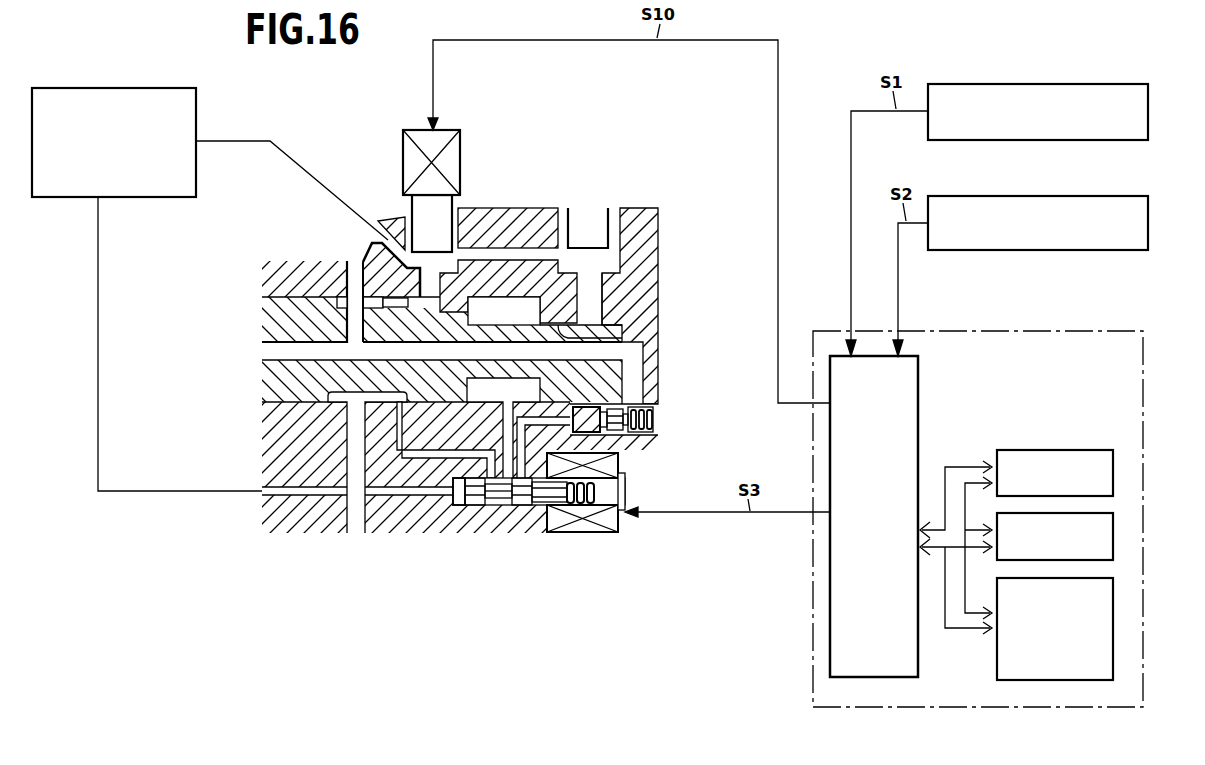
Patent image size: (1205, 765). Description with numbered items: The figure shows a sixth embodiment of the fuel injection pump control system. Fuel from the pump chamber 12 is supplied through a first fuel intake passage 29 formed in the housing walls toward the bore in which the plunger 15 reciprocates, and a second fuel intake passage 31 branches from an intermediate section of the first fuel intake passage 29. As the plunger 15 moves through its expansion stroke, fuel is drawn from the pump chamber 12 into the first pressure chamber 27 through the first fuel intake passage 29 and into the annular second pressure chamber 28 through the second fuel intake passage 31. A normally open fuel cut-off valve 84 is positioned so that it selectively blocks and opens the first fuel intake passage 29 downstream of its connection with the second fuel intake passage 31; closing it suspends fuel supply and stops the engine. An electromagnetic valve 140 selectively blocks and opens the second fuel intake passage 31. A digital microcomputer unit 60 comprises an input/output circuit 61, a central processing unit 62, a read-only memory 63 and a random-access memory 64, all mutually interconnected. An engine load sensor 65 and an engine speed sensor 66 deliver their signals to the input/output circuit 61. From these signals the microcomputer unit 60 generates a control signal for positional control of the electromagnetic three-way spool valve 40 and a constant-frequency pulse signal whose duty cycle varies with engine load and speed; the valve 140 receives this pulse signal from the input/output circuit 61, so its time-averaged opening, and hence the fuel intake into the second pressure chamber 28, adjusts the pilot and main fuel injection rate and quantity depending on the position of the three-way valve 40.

The pump chamber 12 is at (190, 103).
The plunger 15 is at (238, 320).
The first pressure chamber 27 is at (637, 342).
The second pressure chamber 28 is at (508, 303).
The first fuel intake passage 29 is at (596, 298).
The second fuel intake passage 31 is at (427, 278).
The electromagnetic three-way spool valve 40 is at (636, 472).
The digital microcomputer unit 60 is at (800, 595).
The input/output circuit 61 is at (920, 418).
The central processing unit 62 is at (1115, 618).
The read-only memory 63 is at (1115, 540).
The random-access memory 64 is at (1115, 476).
The engine load sensor 65 is at (1150, 116).
The engine speed sensor 66 is at (1150, 226).
The fuel cut-off valve 84 is at (602, 218).
The electromagnetic valve 140 is at (466, 136).